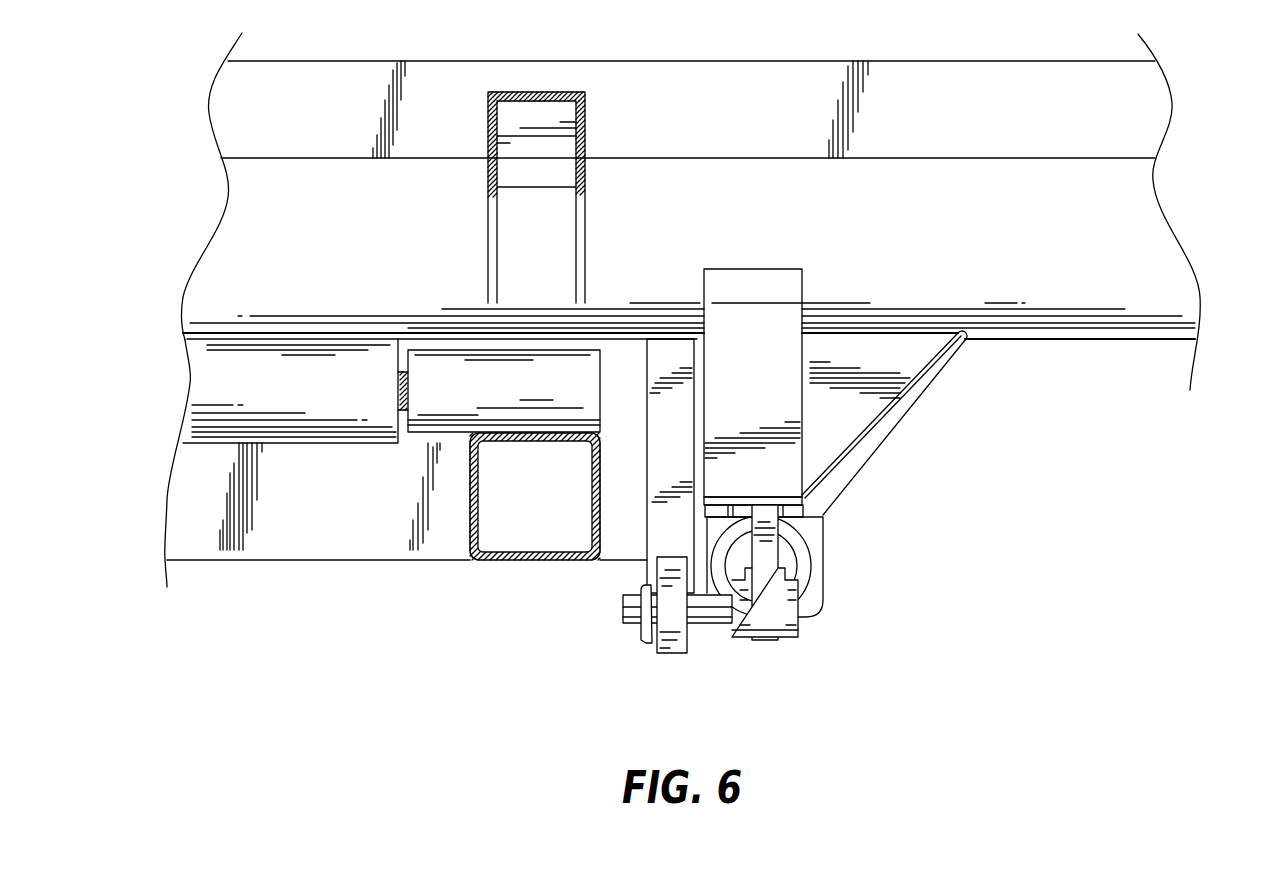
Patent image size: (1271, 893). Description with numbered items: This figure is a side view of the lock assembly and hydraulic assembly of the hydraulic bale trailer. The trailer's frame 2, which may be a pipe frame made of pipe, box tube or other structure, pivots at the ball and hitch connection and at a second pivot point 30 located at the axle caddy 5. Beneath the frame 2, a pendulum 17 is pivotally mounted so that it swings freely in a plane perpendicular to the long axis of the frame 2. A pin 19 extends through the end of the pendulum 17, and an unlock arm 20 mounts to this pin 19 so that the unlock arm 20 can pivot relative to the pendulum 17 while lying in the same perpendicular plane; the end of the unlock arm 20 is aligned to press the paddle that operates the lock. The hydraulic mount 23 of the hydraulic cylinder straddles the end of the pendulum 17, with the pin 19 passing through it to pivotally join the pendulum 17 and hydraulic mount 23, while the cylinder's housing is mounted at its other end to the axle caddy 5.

The frame 2 is at (1153, 250).
The axle caddy 5 is at (345, 538).
The pendulum 17 is at (768, 552).
The pin 19 is at (708, 617).
The unlock arm 20 is at (662, 537).
The hydraulic mount 23 is at (788, 607).
The second pivot point 30 is at (528, 412).